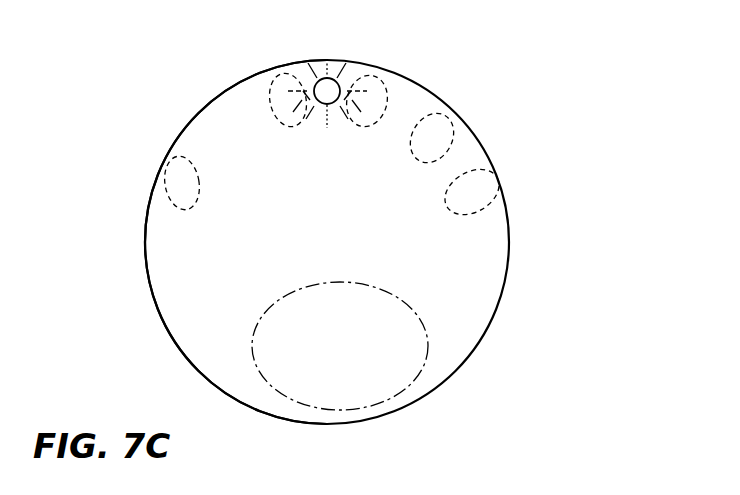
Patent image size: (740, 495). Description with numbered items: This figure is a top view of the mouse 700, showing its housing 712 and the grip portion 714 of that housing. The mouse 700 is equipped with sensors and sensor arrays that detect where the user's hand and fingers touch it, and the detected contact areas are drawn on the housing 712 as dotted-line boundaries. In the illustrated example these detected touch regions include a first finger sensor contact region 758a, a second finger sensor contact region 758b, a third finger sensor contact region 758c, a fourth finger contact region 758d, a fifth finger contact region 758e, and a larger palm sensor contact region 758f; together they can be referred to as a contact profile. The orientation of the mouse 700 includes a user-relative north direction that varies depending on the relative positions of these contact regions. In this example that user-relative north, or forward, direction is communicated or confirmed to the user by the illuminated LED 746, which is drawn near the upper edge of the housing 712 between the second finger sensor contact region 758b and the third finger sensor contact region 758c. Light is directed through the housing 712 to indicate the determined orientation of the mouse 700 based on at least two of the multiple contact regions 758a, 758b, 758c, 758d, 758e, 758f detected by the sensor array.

The mouse 700 is at (606, 207).
The housing 712 is at (177, 298).
The grip portion 714 is at (198, 350).
The illuminated LED 746 is at (326, 88).
The first finger sensor contact region 758a is at (183, 207).
The second finger sensor contact region 758b is at (270, 118).
The third finger sensor contact region 758c is at (382, 125).
The fourth finger contact region 758d is at (447, 121).
The fifth finger contact region 758e is at (483, 178).
The palm sensor contact region 758f is at (378, 388).